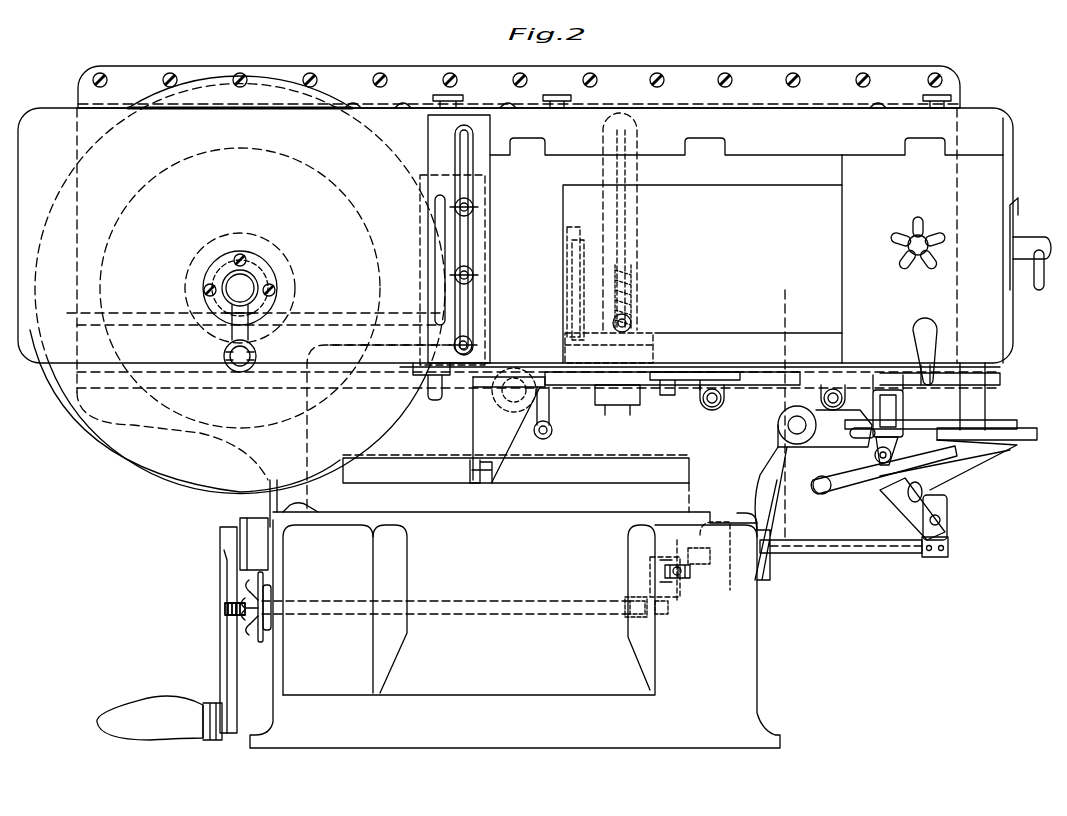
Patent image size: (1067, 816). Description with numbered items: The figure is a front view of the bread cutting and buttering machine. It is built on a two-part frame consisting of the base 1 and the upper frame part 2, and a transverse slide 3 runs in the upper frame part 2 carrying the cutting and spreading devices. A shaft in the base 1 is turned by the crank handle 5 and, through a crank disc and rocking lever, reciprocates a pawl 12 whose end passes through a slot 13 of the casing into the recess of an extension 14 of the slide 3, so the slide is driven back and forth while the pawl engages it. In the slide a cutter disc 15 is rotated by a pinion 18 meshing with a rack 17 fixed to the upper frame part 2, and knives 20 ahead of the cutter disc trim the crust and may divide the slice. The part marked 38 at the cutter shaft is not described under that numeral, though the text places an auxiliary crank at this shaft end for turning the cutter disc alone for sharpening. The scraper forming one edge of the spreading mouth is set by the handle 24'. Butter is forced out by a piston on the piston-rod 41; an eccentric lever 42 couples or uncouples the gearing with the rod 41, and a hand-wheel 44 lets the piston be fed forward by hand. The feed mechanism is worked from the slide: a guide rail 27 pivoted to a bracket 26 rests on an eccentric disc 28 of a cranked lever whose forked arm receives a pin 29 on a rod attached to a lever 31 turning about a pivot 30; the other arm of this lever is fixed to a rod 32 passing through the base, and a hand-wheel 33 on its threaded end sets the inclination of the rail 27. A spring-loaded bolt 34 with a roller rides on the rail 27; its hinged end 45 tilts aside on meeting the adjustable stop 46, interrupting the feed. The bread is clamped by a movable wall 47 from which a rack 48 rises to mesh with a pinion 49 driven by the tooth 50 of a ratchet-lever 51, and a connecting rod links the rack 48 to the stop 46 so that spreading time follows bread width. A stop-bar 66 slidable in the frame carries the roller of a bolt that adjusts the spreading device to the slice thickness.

The base 1 is at (752, 664).
The upper frame part 2 is at (268, 500).
The transverse slide 3 is at (240, 289).
The crank handle 5 is at (131, 712).
The pawl 12 is at (494, 482).
The slot 13 is at (598, 485).
The extension 14 is at (475, 419).
The cutter disc 15 is at (197, 483).
The rack 17 is at (325, 312).
The pinion 18 is at (268, 282).
The knives 20 is at (473, 209).
The handle 24' is at (561, 413).
The bracket 26 is at (838, 487).
The guide rail 27 is at (975, 450).
The eccentric disc 28 is at (903, 482).
The pin 29 is at (940, 520).
The pivot 30 is at (678, 580).
The lever 31 is at (648, 557).
The rod 32 is at (493, 613).
The hand-wheel 33 is at (245, 625).
The bolt 34 is at (880, 378).
The bearing 38 is at (224, 350).
The piston-rod 41 is at (1030, 237).
The eccentric lever 42 is at (935, 355).
The hand-wheel 44 is at (912, 247).
The end of bolt 45 is at (874, 445).
The adjustable stop 46 is at (1030, 432).
The movable wall 47 is at (565, 273).
The rack 48 is at (650, 338).
The pinion 49 is at (632, 322).
The tooth 50 is at (630, 302).
The ratchet-lever 51 is at (628, 222).
The stop-bar 66 is at (662, 386).